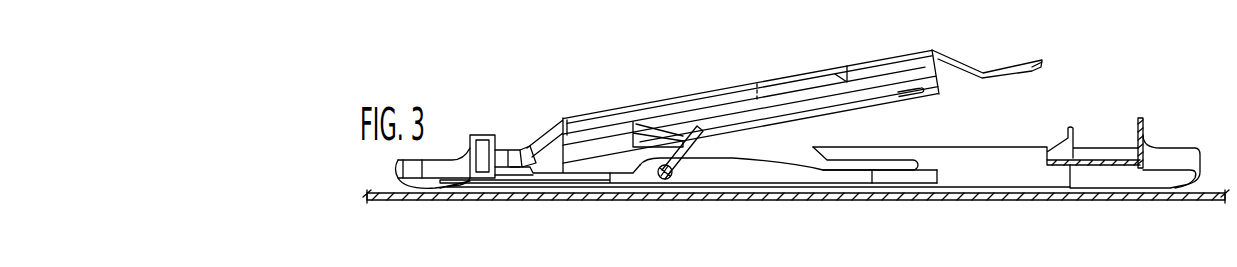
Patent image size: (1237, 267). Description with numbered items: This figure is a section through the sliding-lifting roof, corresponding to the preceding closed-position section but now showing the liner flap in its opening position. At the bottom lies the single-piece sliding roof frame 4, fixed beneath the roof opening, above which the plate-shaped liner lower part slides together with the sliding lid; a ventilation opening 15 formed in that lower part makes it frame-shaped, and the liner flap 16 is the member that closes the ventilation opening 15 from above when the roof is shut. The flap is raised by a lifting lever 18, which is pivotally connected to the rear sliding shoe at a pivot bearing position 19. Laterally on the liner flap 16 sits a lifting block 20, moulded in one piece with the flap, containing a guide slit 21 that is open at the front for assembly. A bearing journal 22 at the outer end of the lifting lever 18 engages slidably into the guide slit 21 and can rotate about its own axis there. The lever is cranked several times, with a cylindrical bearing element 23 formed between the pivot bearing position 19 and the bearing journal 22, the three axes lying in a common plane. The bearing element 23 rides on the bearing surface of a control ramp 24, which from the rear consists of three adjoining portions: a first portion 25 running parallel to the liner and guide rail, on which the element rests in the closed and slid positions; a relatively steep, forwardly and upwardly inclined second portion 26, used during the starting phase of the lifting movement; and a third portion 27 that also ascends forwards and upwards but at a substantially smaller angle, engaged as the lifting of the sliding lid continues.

The sliding roof frame 4 is at (1205, 201).
The ventilation opening 15 is at (1003, 137).
The liner flap 16 is at (897, 57).
The lifting lever 18 is at (702, 146).
The pivot bearing position 19 is at (666, 179).
The lifting block 20 is at (935, 94).
The guide slit 21 is at (923, 93).
The bearing journal 22 is at (700, 128).
The bearing element 23 is at (689, 125).
The control ramp 24 is at (701, 181).
The first portion 25 is at (877, 172).
The second portion 26 is at (792, 171).
The third portion 27 is at (737, 160).